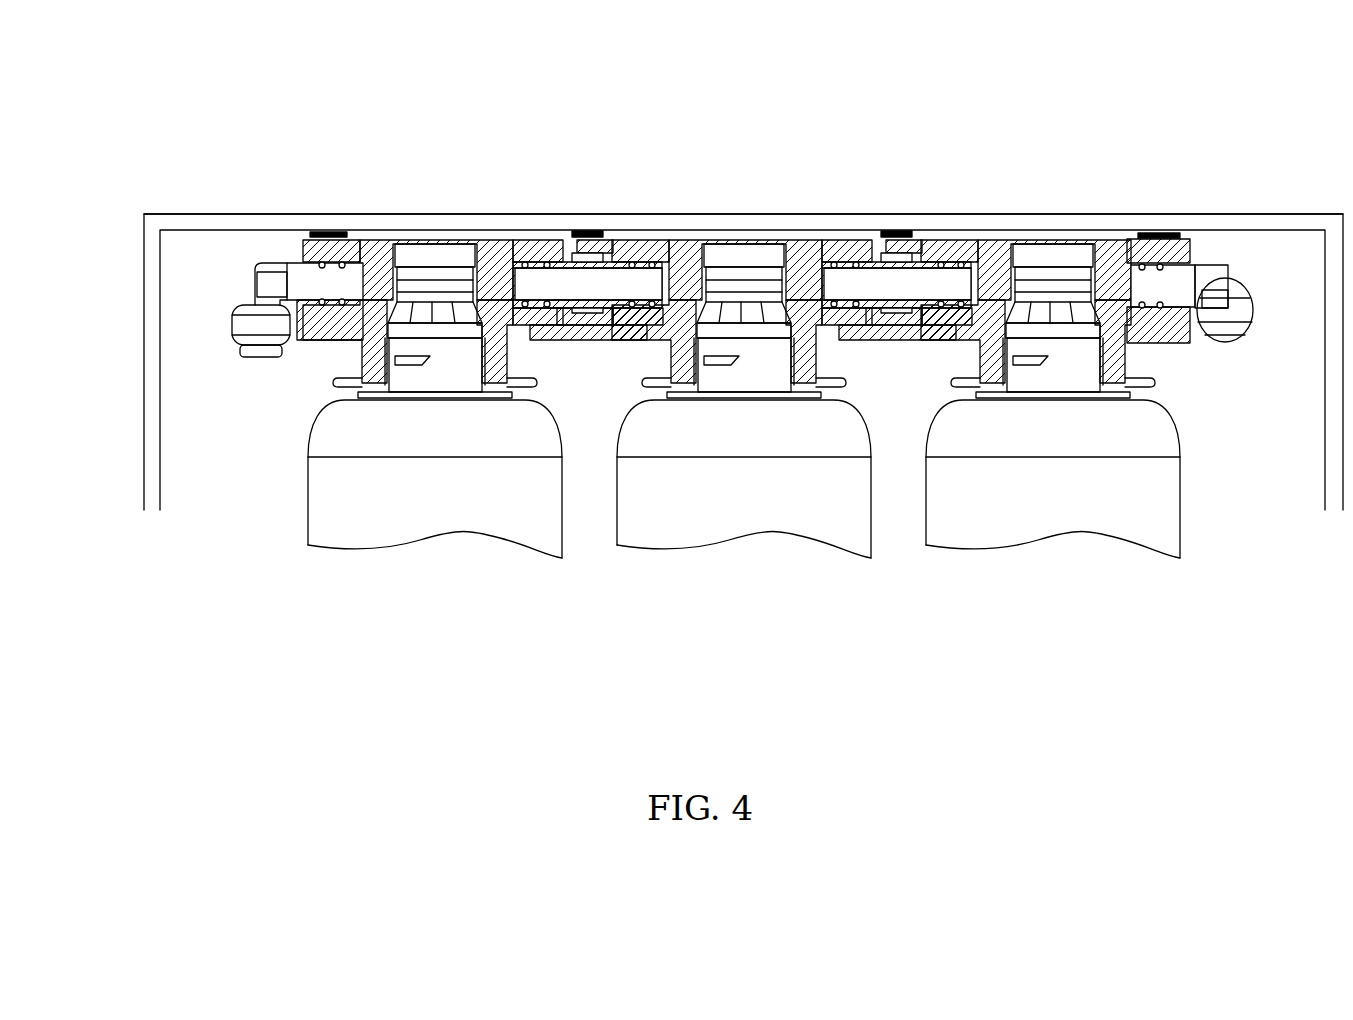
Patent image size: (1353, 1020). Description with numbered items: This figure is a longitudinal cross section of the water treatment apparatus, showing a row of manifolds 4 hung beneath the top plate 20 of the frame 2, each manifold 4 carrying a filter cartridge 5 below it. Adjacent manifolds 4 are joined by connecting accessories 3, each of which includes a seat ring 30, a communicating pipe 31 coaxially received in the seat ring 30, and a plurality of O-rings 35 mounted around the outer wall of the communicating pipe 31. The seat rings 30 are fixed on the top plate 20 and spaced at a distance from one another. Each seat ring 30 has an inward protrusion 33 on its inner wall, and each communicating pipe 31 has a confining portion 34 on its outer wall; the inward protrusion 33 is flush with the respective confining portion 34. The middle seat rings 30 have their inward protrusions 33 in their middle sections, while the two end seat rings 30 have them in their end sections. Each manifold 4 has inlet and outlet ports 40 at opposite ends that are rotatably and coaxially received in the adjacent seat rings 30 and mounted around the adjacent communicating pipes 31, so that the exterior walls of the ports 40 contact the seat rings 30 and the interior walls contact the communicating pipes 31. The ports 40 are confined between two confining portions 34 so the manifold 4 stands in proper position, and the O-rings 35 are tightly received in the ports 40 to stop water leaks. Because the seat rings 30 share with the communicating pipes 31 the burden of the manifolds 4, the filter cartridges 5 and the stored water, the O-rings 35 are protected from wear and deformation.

The frame 2 is at (132, 392).
The top plate 20 is at (175, 220).
The connecting accessory 3 is at (220, 137).
The seat ring 30 is at (350, 233).
The communicating pipe 31 is at (293, 262).
The inward protrusion 33 is at (313, 258).
The confining portion 34 is at (320, 262).
The O-ring 35 is at (323, 235).
The manifold 4 is at (373, 350).
The inlet and outlet port 40 is at (337, 318).
The filter cartridge 5 is at (370, 523).